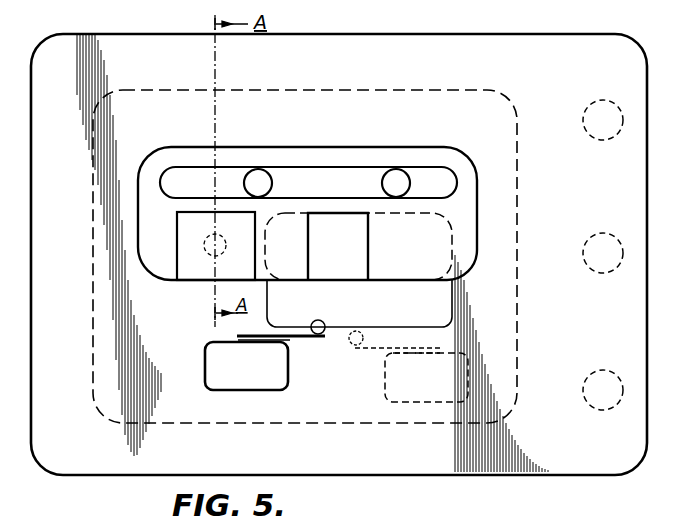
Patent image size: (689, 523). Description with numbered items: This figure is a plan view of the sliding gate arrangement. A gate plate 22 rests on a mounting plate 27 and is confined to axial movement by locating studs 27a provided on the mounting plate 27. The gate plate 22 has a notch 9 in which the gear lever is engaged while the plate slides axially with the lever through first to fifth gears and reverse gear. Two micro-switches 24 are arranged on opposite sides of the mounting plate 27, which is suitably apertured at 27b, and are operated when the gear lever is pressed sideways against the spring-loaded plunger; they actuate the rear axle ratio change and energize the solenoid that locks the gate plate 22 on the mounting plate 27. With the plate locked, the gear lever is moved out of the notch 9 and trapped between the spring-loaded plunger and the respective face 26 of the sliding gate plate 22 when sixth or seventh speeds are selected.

The notch 9 is at (358, 246).
The gate plate 22 is at (326, 160).
The micro-switches 24 is at (220, 375).
The face 26 is at (275, 283).
The mounting plate 27 is at (307, 189).
The locating studs 27a is at (258, 176).
The aperture 27b is at (386, 327).